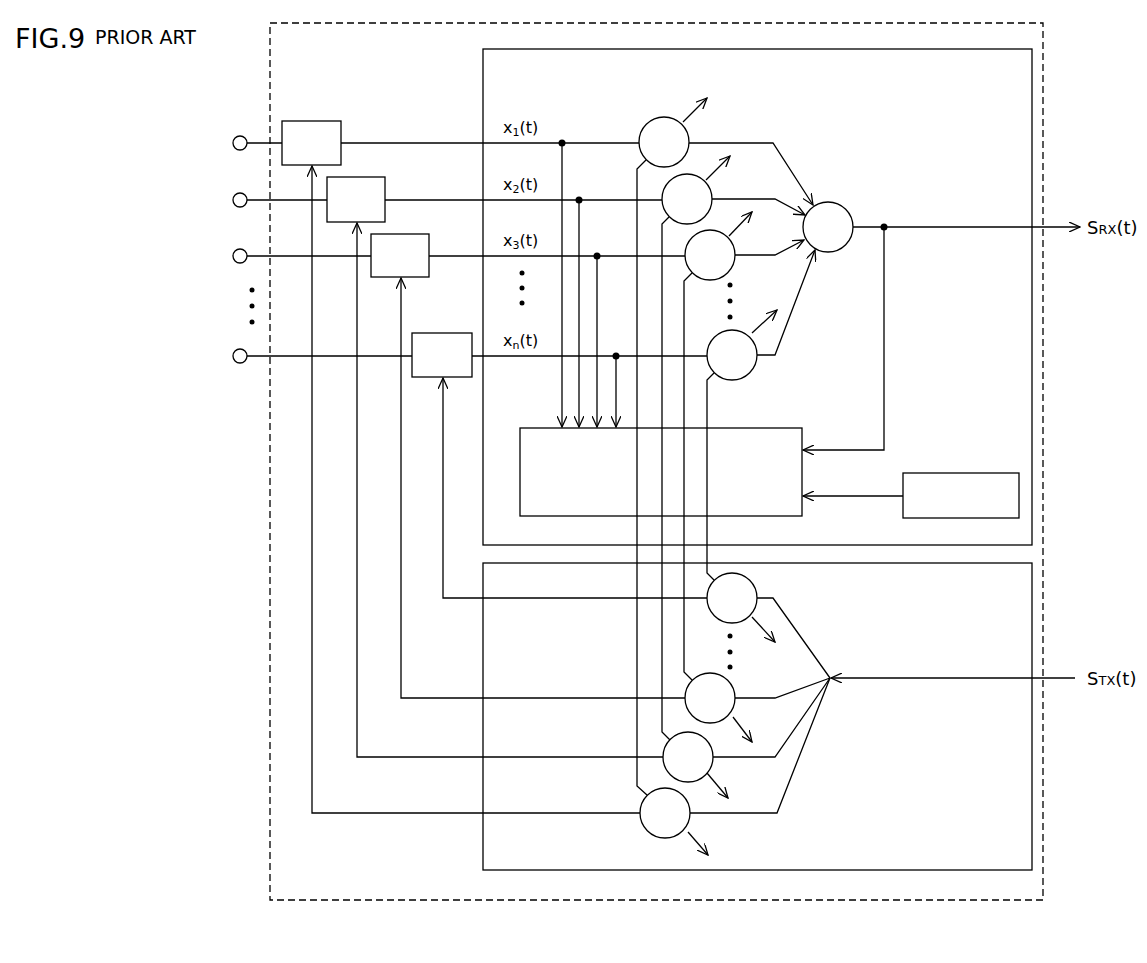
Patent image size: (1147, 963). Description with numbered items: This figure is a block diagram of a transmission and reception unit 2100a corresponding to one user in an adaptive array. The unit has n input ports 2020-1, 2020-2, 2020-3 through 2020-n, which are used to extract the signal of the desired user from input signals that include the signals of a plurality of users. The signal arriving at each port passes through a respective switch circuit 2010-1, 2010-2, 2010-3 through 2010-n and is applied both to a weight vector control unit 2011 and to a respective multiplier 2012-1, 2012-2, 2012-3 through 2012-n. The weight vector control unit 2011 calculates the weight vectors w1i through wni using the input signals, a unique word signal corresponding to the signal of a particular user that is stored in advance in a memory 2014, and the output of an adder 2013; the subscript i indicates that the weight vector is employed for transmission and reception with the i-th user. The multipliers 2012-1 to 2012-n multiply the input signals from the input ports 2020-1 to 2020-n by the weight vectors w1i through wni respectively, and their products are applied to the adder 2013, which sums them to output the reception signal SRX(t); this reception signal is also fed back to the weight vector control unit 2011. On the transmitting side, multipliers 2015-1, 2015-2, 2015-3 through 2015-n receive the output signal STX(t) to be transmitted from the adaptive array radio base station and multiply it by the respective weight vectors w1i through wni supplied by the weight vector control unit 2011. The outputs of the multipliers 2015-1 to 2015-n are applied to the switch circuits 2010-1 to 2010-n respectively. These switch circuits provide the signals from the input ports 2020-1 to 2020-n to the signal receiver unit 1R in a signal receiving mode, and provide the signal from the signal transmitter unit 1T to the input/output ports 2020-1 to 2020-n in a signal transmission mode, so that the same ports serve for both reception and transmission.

The transmission and reception unit 2100a is at (1043, 45).
The signal receiver unit 1R is at (1032, 100).
The signal transmitter unit 1T is at (1032, 603).
The input port 2020-1 is at (222, 143).
The input port 2020-2 is at (245, 200).
The input port 2020-3 is at (267, 256).
The input port 2020-n is at (287, 356).
The switch circuit 2010-1 is at (329, 121).
The switch circuit 2010-2 is at (374, 177).
The switch circuit 2010-3 is at (418, 234).
The switch circuit 2010-n is at (442, 333).
The multiplier 2012-1 is at (652, 118).
The multiplier 2012-2 is at (712, 190).
The multiplier 2012-3 is at (730, 272).
The multiplier 2012-n is at (745, 377).
The adder 2013 is at (836, 204).
The weight vector control unit 2011 is at (802, 510).
The memory 2014 is at (991, 473).
The multiplier 2015-1 is at (692, 823).
The multiplier 2015-2 is at (713, 765).
The multiplier 2015-3 is at (762, 682).
The multiplier 2015-n is at (755, 587).